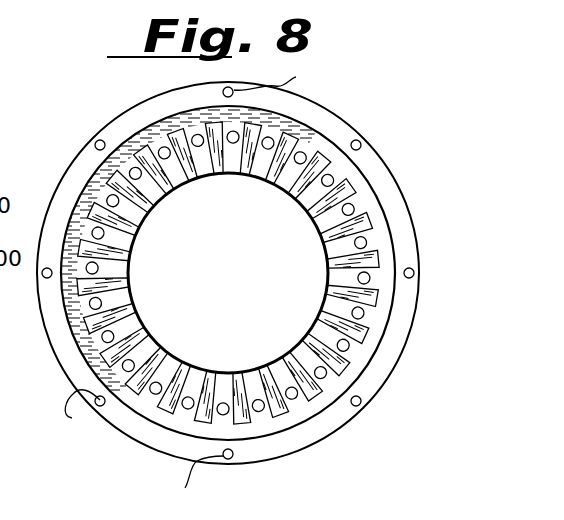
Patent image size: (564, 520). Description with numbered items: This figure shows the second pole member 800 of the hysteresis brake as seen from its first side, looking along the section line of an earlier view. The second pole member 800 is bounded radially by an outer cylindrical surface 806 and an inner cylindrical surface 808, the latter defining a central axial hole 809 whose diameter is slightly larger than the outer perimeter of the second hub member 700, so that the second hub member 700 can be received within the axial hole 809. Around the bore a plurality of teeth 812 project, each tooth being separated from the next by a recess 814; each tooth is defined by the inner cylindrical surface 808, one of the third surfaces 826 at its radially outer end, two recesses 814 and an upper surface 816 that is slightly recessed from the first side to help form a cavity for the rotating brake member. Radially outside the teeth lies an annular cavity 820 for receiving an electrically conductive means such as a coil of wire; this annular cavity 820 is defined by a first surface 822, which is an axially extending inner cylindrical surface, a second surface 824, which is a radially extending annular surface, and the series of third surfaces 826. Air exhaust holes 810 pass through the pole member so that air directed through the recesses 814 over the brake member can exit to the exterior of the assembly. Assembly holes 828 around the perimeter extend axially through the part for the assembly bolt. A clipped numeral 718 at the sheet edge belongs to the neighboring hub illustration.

The second pole member 800 is at (338, 97).
The outer cylindrical surface 806 is at (136, 108).
The inner cylindrical surface 808 is at (273, 185).
The axial hole 809 is at (298, 245).
The air exhaust holes 810 is at (331, 181).
The teeth 812 is at (125, 183).
The recess 814 is at (140, 227).
The upper surface of each tooth 816 is at (340, 267).
The annular cavity 820 is at (382, 303).
The first surface 822 is at (372, 330).
The second surface 824 is at (370, 345).
The third surfaces 826 is at (312, 360).
The assembly holes 828 is at (184, 288).
The second hub member 700 is at (15, 334).
The adjacent figure numeral (clipped) 718 is at (9, 379).